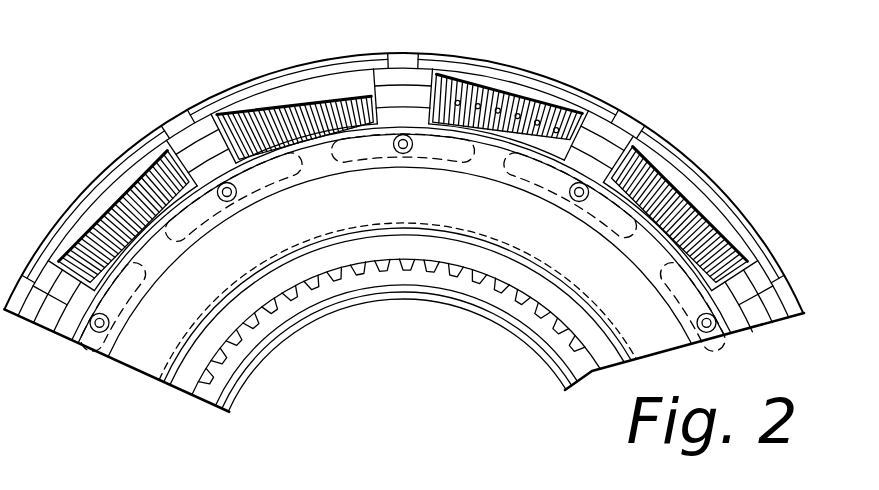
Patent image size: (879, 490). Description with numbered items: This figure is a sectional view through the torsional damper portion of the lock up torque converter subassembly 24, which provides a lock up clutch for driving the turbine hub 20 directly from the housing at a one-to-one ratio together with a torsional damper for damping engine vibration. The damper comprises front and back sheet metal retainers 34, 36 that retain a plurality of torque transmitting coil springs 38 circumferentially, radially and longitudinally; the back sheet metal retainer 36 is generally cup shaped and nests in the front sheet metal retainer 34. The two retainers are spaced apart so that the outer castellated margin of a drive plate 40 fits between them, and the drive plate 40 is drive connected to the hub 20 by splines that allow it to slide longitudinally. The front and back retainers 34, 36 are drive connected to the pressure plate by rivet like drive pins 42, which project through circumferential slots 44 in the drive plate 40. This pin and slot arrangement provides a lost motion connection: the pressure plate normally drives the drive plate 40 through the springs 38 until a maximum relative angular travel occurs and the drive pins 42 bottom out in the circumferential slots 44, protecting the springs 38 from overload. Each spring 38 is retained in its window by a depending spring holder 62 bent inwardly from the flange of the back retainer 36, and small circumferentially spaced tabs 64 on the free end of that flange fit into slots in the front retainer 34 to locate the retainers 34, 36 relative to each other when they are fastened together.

The turbine hub 20 is at (493, 318).
The subassembly 24 is at (606, 104).
The front sheet metal retainer 34 is at (517, 72).
The back sheet metal retainer 36 is at (497, 168).
The torque transmitting coil springs 38 is at (553, 100).
The drive plate 40 is at (323, 226).
The drive pins 42 is at (404, 153).
The circumferential slots 44 is at (440, 160).
The spring holders 62 is at (110, 197).
The tabs 64 is at (180, 117).